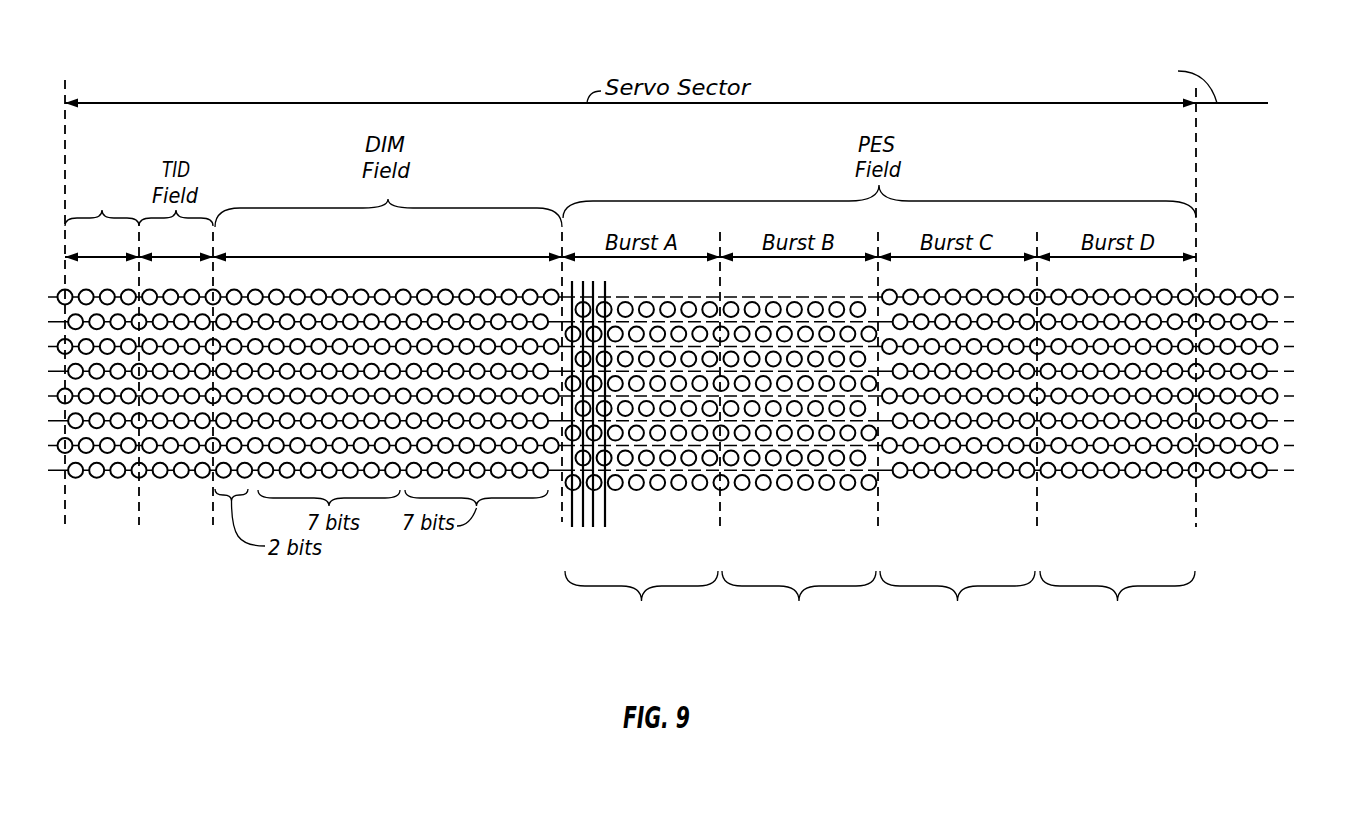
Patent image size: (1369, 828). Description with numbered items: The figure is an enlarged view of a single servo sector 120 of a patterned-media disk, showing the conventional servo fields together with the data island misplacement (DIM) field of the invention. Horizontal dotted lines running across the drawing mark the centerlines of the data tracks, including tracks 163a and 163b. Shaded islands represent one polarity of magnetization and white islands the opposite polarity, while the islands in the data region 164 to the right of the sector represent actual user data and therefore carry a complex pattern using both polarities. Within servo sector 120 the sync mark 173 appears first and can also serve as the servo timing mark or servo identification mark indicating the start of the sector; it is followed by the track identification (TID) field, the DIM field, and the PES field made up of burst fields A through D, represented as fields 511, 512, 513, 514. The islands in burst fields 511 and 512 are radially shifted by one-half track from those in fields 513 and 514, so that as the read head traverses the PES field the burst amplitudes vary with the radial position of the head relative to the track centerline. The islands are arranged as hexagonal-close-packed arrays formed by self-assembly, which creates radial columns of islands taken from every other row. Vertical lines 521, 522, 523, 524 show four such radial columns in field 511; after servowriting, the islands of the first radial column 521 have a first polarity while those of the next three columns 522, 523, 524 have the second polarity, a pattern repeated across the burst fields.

The servo sector 120 is at (497, 103).
The data region 164 is at (1230, 104).
The sync mark 173 is at (102, 196).
The data track 163a is at (1277, 322).
The data track 163b is at (1277, 470).
The burst field A 511 is at (641, 602).
The burst field B 512 is at (799, 602).
The burst field C 513 is at (957, 602).
The burst field D 514 is at (1117, 602).
The first radial column 521 is at (572, 497).
The radial column 522 is at (583, 519).
The radial column 523 is at (593, 519).
The radial column 524 is at (605, 497).